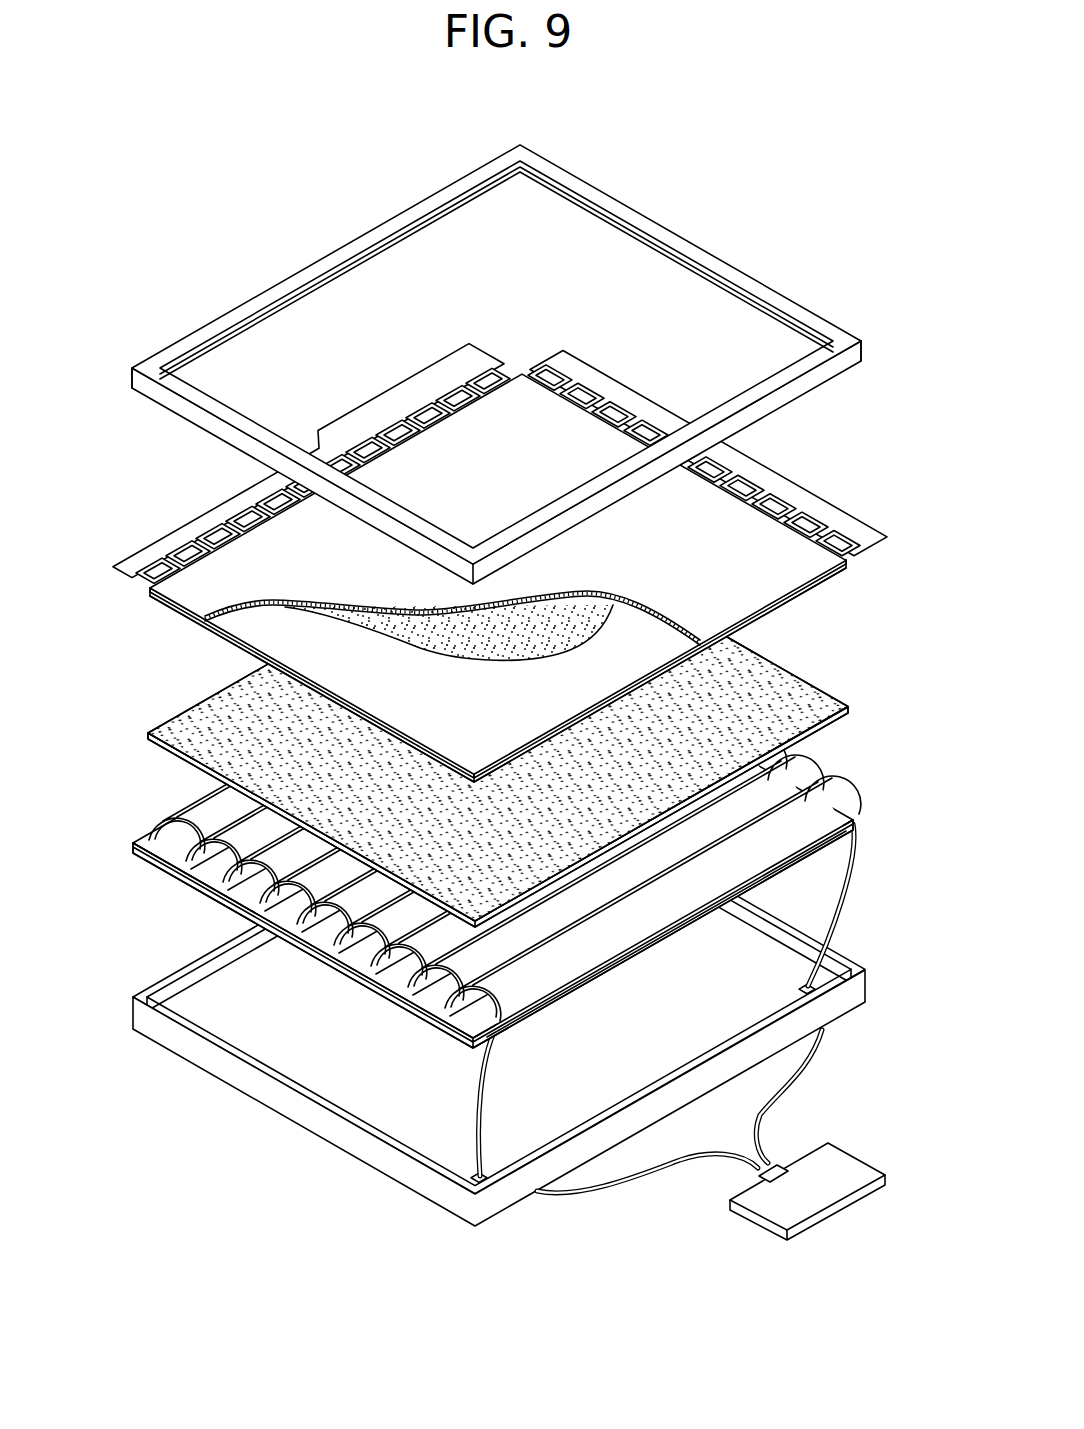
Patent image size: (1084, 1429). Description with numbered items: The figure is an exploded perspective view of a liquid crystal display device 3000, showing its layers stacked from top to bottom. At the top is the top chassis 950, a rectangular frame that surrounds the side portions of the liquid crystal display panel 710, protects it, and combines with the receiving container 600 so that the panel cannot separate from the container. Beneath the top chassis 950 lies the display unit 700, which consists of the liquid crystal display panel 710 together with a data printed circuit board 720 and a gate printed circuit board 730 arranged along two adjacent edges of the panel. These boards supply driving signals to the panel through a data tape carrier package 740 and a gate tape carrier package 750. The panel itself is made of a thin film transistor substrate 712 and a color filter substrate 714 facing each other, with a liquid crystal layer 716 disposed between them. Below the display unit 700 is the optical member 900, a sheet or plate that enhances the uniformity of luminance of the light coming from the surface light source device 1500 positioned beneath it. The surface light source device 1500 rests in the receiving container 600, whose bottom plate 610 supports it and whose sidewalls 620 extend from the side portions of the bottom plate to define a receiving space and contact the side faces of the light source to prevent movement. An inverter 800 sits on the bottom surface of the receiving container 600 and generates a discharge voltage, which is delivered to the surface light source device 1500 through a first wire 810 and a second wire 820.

The liquid crystal display device 3000 is at (371, 125).
The top chassis 950 is at (170, 440).
The display unit 700 is at (497, 538).
The liquid crystal display panel 710 is at (534, 578).
The thin film transistor substrate 712 is at (250, 630).
The color filter substrate 714 is at (757, 583).
The liquid crystal layer 716 is at (578, 610).
The data printed circuit board 720 is at (433, 375).
The gate printed circuit board 730 is at (807, 497).
The data tape carrier package 740 is at (478, 377).
The gate tape carrier package 750 is at (565, 378).
The optical member 900 is at (150, 753).
The surface light source device 1500 is at (864, 823).
The receiving container 600 is at (476, 999).
The bottom plate 610 is at (390, 1125).
The sidewalls 620 is at (255, 1088).
The first wire 810 is at (613, 1190).
The second wire 820 is at (758, 1136).
The inverter 800 is at (778, 1208).